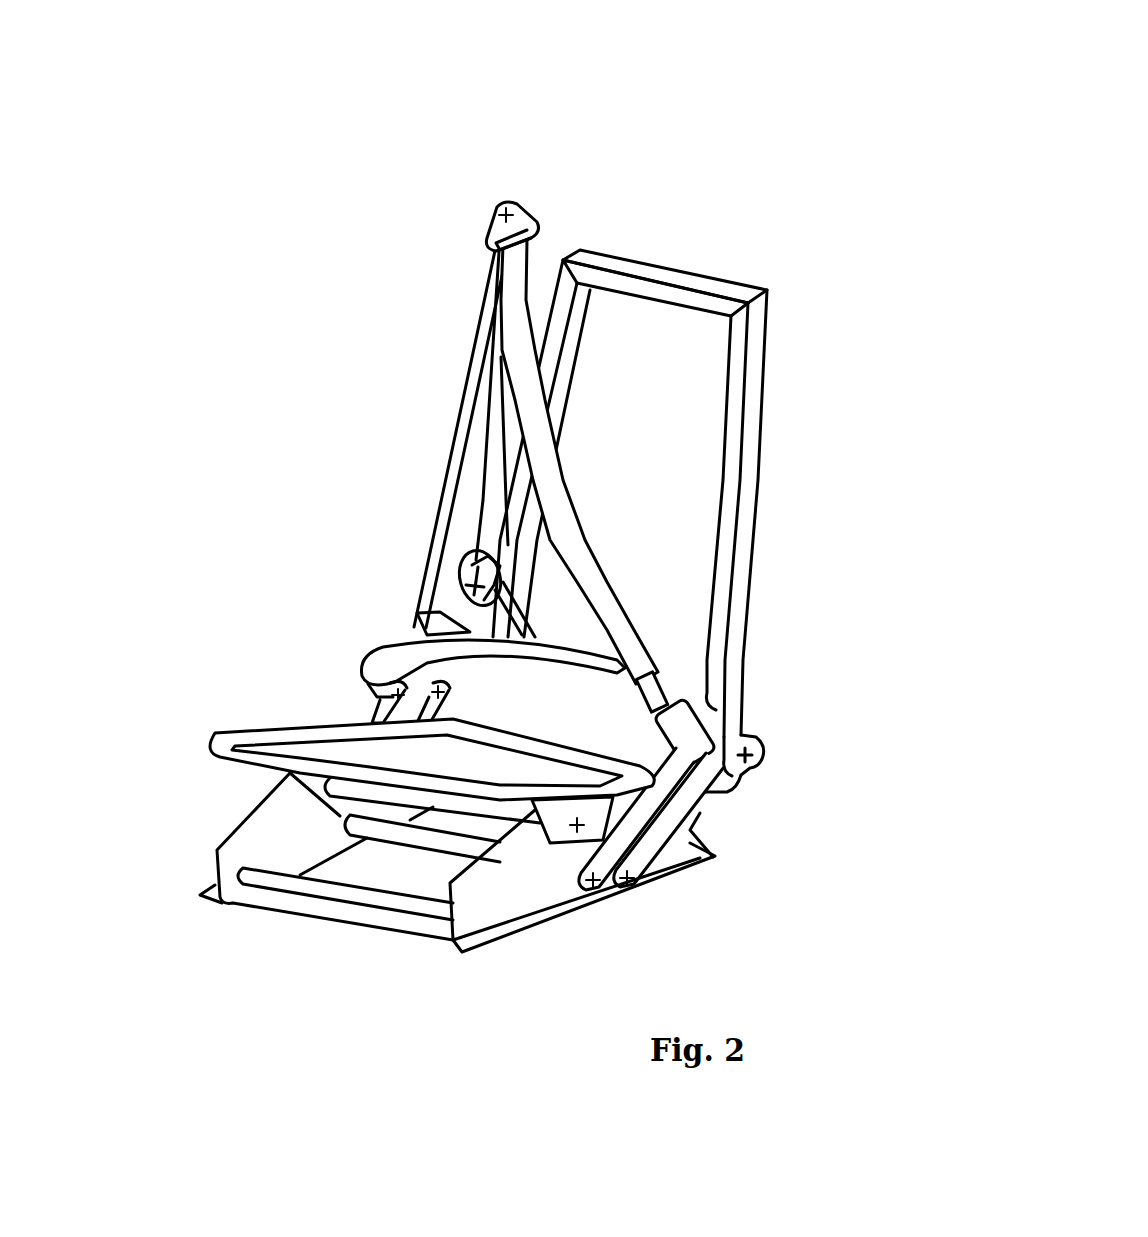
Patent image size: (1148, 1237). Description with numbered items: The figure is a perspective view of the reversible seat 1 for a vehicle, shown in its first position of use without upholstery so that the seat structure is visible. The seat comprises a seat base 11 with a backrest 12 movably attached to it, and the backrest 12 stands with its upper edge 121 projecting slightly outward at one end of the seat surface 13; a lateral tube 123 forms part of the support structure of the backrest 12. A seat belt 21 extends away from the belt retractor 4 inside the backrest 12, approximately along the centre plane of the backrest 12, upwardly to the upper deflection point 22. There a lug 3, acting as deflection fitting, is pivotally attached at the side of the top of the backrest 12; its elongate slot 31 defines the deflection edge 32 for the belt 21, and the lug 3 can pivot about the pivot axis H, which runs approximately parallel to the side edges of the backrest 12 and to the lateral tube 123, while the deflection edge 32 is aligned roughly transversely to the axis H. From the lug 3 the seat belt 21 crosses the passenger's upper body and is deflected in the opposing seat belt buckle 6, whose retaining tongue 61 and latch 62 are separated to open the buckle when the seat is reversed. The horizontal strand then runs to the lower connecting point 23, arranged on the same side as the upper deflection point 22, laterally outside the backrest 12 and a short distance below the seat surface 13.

The reversible seat 1 is at (400, 72).
The seat base 11 is at (230, 925).
The backrest 12 is at (698, 485).
The upper edge 121 is at (692, 272).
The lateral tube 123 is at (465, 403).
The seat surface 13 is at (475, 768).
The seat belt 21 is at (532, 425).
The upper deflection point 22 is at (553, 192).
The lower connecting point 23 is at (343, 672).
The lug 3 is at (420, 200).
The elongate slot 31 is at (498, 208).
The deflection edge 32 is at (491, 237).
The belt retractor 4 is at (468, 578).
The seat belt buckle 6 is at (777, 714).
The retaining tongue 61 is at (647, 680).
The latch 62 is at (683, 725).
The pivot axis H is at (511, 203).